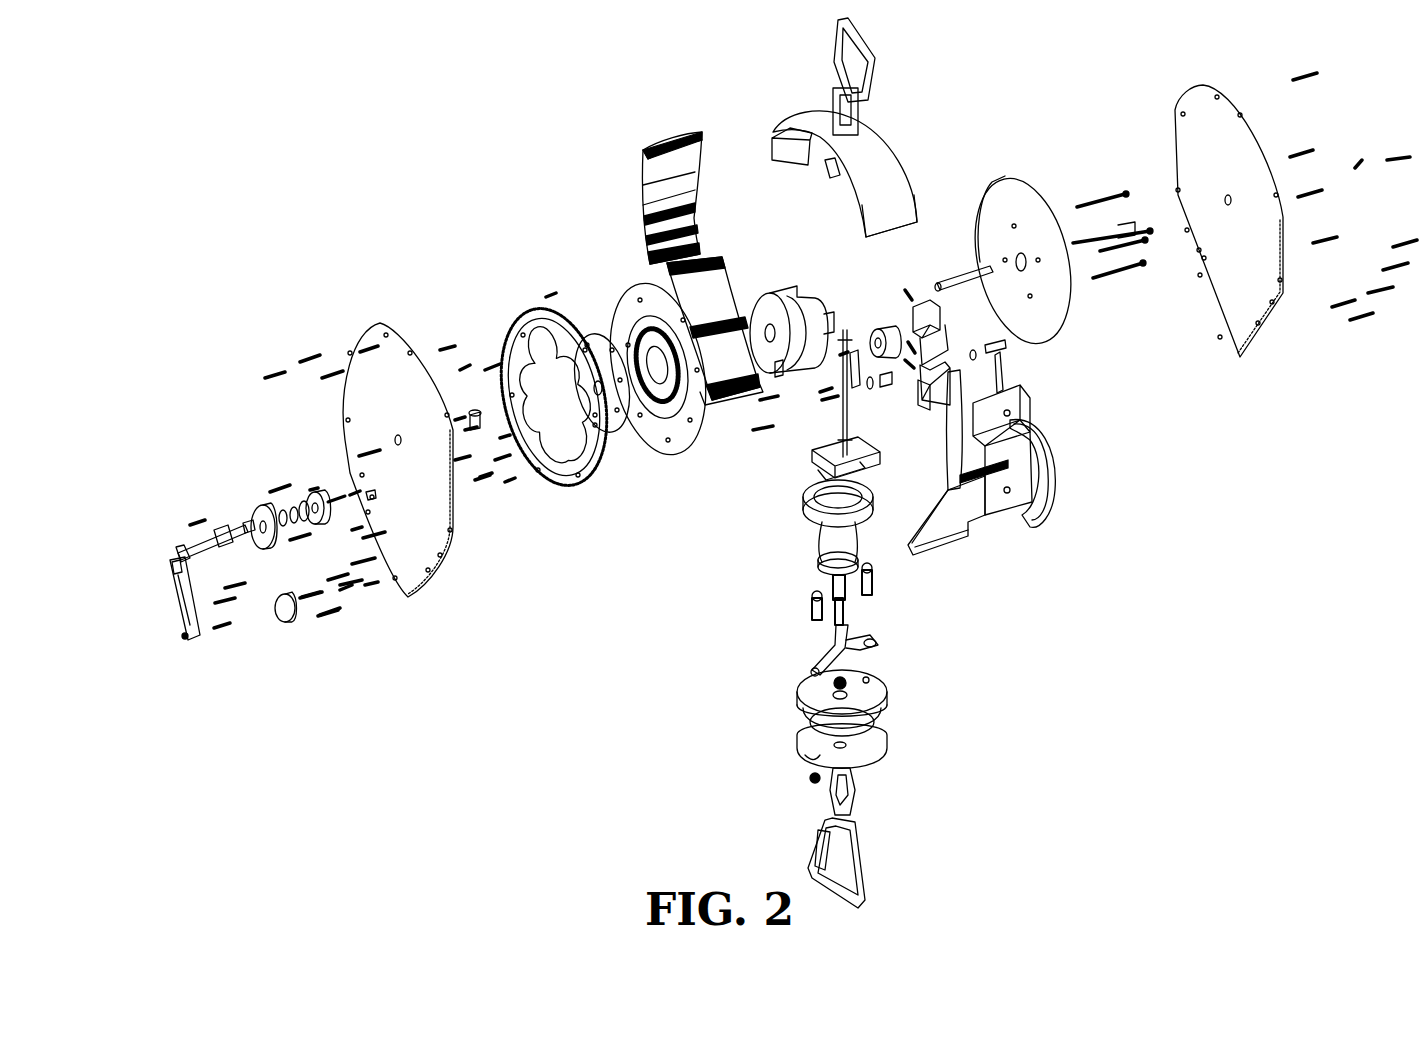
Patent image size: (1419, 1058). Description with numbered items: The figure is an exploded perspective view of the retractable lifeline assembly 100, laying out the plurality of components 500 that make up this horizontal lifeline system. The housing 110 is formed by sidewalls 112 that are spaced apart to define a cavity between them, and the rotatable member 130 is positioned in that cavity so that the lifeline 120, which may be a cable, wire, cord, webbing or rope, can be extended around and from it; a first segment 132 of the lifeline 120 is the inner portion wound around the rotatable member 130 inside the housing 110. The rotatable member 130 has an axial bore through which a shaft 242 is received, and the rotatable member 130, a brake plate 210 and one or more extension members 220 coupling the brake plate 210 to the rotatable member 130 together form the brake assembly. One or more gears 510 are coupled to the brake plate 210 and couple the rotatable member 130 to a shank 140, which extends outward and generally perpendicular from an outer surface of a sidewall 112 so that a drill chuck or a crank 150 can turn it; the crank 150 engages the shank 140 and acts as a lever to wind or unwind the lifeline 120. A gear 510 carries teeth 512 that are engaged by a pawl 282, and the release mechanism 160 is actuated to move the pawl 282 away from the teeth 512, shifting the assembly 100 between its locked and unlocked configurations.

The retractable lifeline assembly 100 is at (393, 103).
The housing 110 is at (630, 148).
The sidewalls 112 is at (1270, 225).
The lifeline 120 is at (850, 590).
The rotatable member 130 is at (1000, 170).
The first segment 132 is at (810, 458).
The shank 140 is at (201, 532).
The crank 150 is at (180, 603).
The release mechanism 160 is at (953, 367).
The brake plate 210 is at (660, 425).
The extension members 220 is at (1133, 280).
The shaft 242 is at (978, 282).
The pawl 282 is at (920, 392).
The components 500 is at (614, 527).
The gears 510 is at (560, 470).
The teeth 512 is at (530, 305).